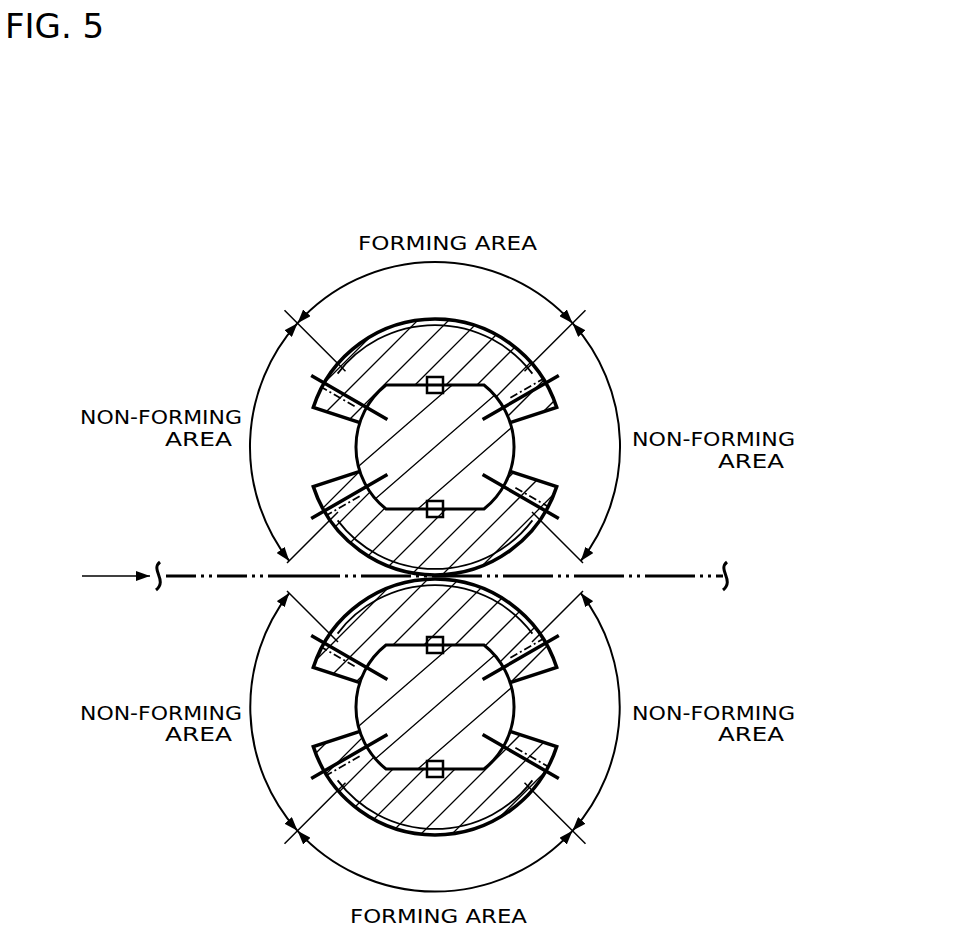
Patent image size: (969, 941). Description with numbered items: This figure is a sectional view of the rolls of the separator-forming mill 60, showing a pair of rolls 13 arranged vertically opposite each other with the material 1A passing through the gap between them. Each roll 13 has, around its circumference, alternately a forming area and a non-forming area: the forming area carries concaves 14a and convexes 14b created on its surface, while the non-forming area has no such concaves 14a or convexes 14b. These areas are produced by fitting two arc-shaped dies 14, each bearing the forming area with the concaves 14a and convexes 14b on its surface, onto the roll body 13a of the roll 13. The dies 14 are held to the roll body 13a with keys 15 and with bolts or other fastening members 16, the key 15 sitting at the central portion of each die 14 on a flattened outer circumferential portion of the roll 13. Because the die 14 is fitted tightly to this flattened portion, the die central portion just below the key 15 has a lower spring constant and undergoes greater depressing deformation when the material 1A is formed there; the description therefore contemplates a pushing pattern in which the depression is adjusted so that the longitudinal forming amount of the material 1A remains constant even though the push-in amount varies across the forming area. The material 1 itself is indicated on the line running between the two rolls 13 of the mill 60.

The separator-forming mill 60 is at (267, 203).
The pipe material 1 is at (650, 569).
The material 1A is at (187, 570).
The roll 13 is at (472, 577).
The roll body 13a is at (504, 436).
The arc-shaped die 14 is at (435, 583).
The concave 14a is at (483, 326).
The convex 14b is at (408, 323).
The key 15 is at (445, 379).
The fastening member 16 is at (311, 376).